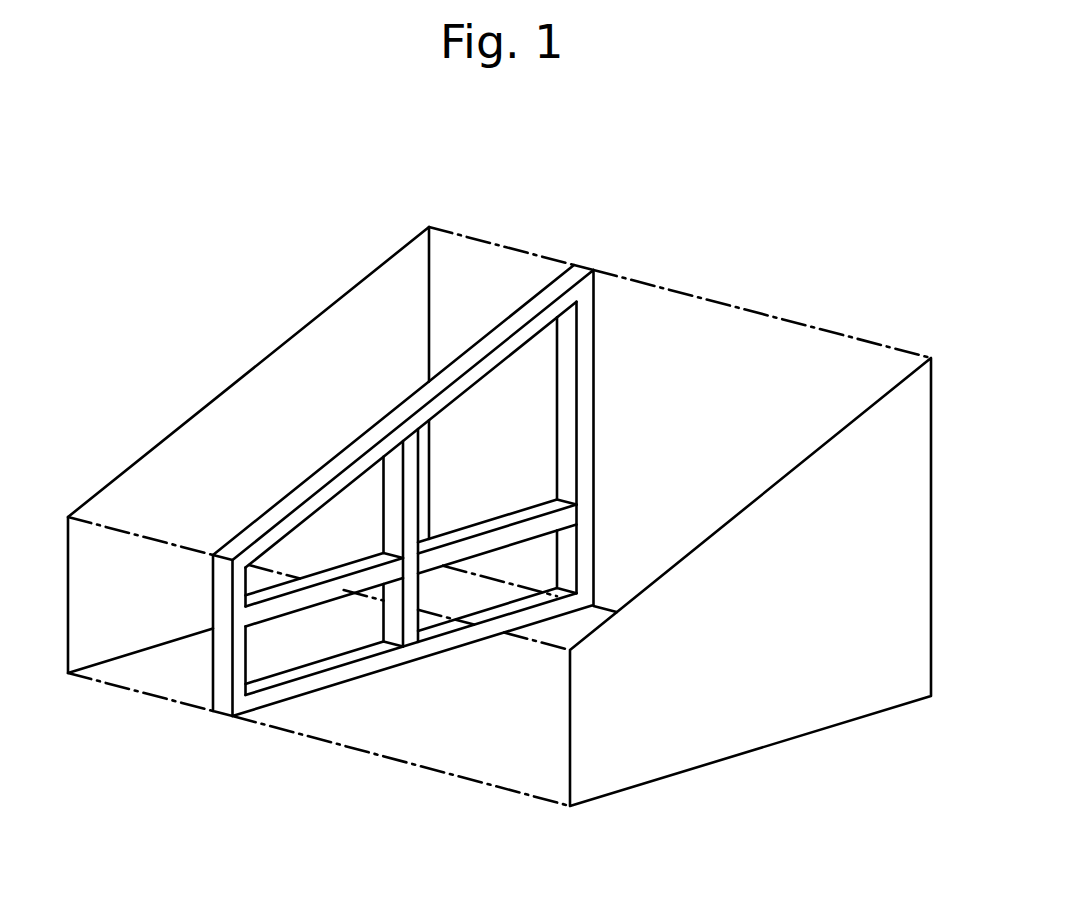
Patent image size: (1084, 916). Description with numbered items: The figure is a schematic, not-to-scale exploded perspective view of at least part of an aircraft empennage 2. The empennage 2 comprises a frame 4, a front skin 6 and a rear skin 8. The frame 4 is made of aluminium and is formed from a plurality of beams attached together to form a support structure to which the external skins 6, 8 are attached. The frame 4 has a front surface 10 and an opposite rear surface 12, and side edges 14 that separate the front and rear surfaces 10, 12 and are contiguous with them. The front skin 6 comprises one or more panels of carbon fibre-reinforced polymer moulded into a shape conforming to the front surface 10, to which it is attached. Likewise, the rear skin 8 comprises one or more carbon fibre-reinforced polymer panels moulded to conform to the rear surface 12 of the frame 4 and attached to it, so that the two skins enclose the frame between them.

The empennage 2 is at (499, 453).
The frame 4 is at (394, 504).
The front skin 6 is at (782, 707).
The rear skin 8 is at (238, 410).
The front surface 10 is at (527, 542).
The rear surface 12 is at (500, 515).
The side edges 14 is at (397, 412).